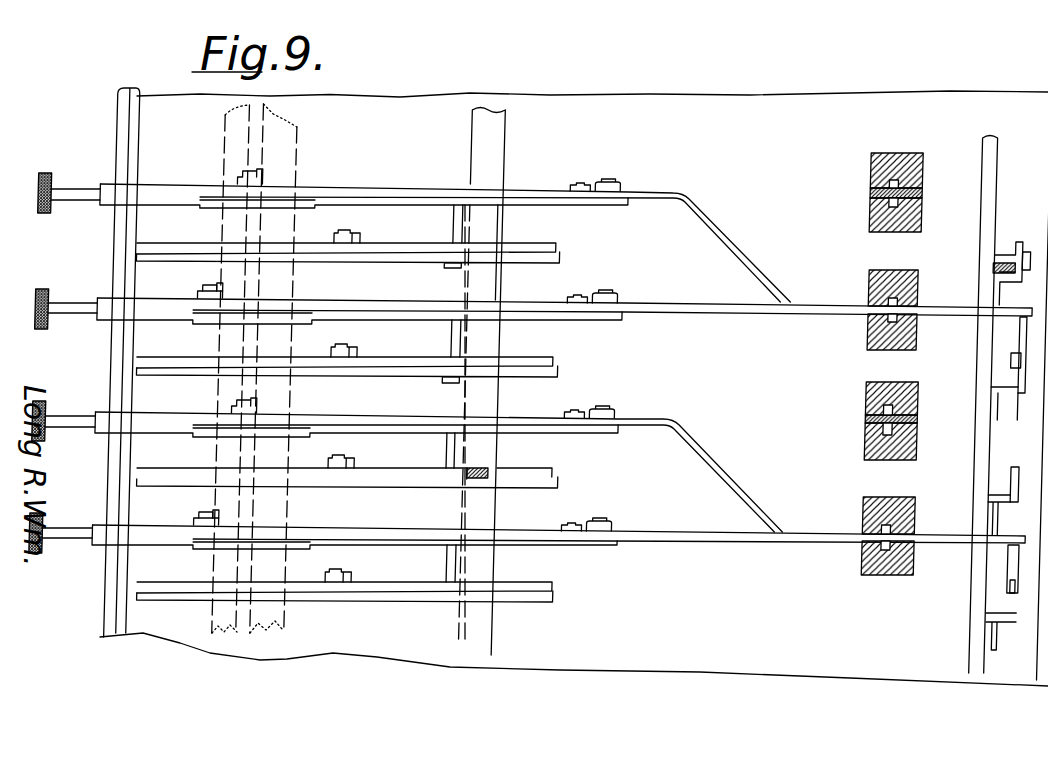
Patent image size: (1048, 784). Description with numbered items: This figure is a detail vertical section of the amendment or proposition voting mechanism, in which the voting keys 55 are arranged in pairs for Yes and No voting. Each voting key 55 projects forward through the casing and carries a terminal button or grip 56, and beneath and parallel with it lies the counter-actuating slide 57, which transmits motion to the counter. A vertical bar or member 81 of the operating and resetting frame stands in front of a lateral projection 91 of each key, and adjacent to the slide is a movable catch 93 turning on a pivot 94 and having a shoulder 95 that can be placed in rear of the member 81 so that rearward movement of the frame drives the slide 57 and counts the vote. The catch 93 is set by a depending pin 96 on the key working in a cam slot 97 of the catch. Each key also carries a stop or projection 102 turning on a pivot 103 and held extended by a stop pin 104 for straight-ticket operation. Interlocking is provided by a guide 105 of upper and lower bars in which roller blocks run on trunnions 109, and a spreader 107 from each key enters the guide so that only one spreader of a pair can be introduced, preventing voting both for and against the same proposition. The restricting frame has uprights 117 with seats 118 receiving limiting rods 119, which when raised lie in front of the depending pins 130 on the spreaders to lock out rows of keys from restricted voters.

The voting key 55 is at (397, 178).
The terminal button or grip 56 is at (39, 441).
The counter-actuating slide 57 is at (560, 257).
The vertical bar or member of operating frame 81 is at (466, 622).
The projection on voting key 91 is at (575, 184).
The movable catch 93 is at (547, 242).
The pivot of catch 94 is at (337, 468).
The shoulder of catch 95 is at (503, 582).
The depending pin 96 is at (448, 222).
The cam slot 97 is at (433, 468).
The stop or projection 102 is at (200, 301).
The pivot of stop 103 is at (213, 288).
The stop pin 104 is at (220, 288).
The guide 105 is at (872, 350).
The spreader 107 is at (665, 303).
The trunnion 109 is at (884, 320).
The upright of restricting frame 117 is at (976, 185).
The seat 118 is at (1018, 241).
The limiting rod 119 is at (990, 262).
The depending pin on spreader 130 is at (1017, 337).